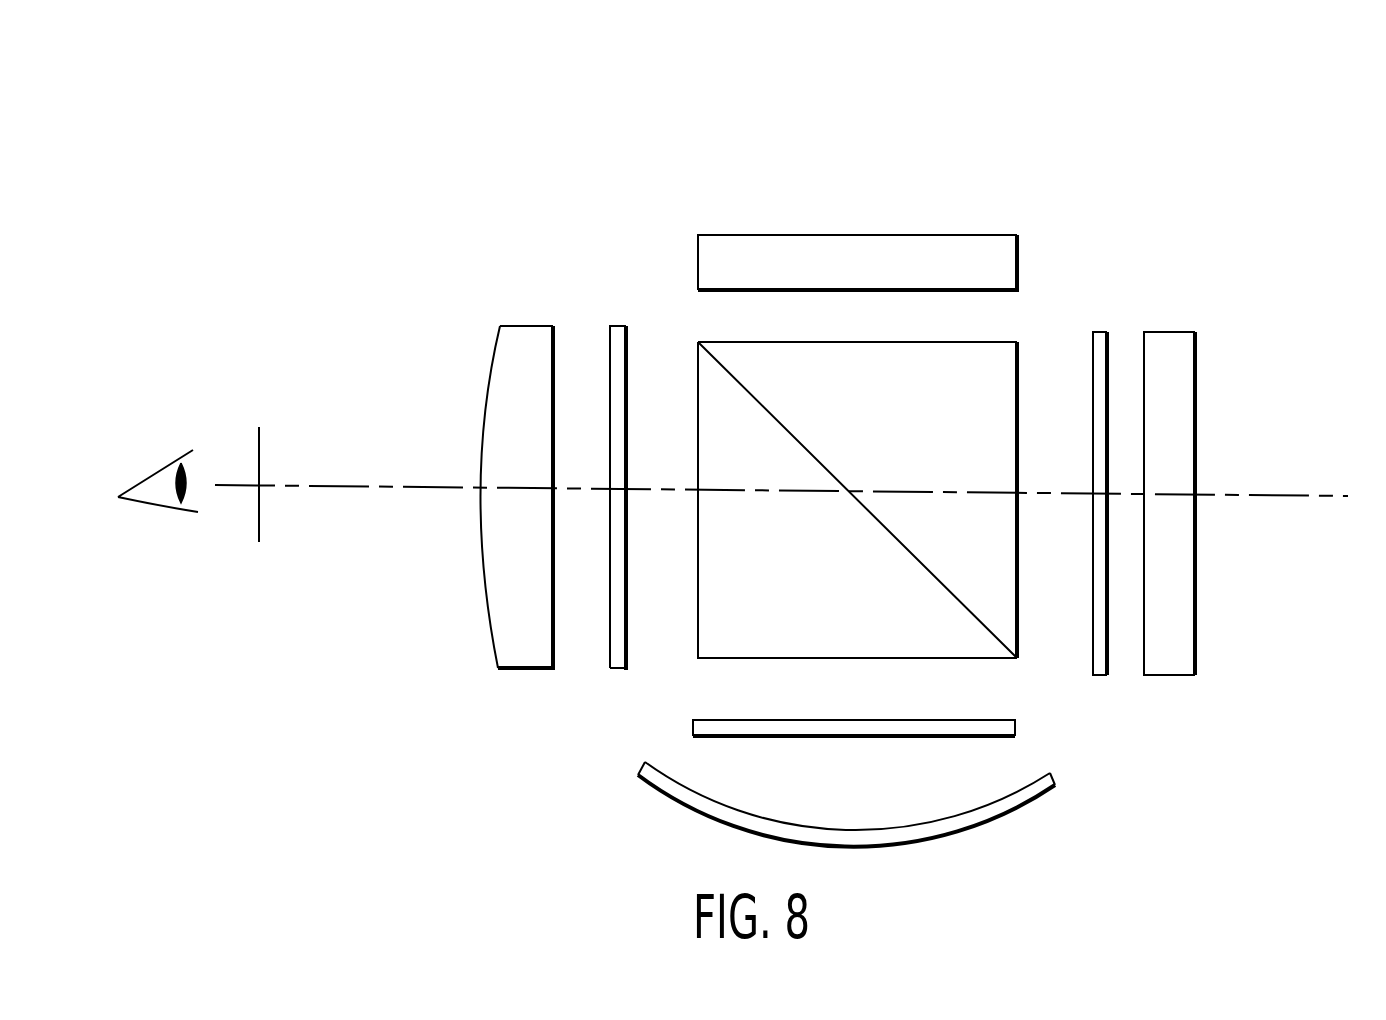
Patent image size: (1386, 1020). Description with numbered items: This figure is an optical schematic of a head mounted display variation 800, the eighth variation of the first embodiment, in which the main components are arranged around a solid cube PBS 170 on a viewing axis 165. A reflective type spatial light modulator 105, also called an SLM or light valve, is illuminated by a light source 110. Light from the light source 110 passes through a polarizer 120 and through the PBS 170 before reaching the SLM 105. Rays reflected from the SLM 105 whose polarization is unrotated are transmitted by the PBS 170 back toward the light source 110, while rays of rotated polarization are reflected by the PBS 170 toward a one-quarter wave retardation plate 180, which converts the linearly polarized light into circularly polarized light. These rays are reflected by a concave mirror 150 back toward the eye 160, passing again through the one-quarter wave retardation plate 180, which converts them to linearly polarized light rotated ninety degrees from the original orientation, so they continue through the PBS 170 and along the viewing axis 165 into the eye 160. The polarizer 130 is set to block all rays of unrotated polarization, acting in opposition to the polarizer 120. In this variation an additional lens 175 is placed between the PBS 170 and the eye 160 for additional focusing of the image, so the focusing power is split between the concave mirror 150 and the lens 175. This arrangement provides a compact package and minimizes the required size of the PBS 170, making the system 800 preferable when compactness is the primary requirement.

The head mounted display variation 800 is at (1178, 183).
The reflective type spatial light modulator 105 is at (842, 243).
The light source 110 is at (1182, 367).
The polarizer 120 is at (1093, 678).
The polarizer 130 is at (605, 672).
The concave mirror 150 is at (968, 828).
The eye 160 is at (150, 463).
The viewing axis 165 is at (1333, 493).
The solid cube PBS 170 is at (690, 327).
The lens 175 is at (530, 672).
The one-quarter wave retardation plate 180 is at (693, 727).